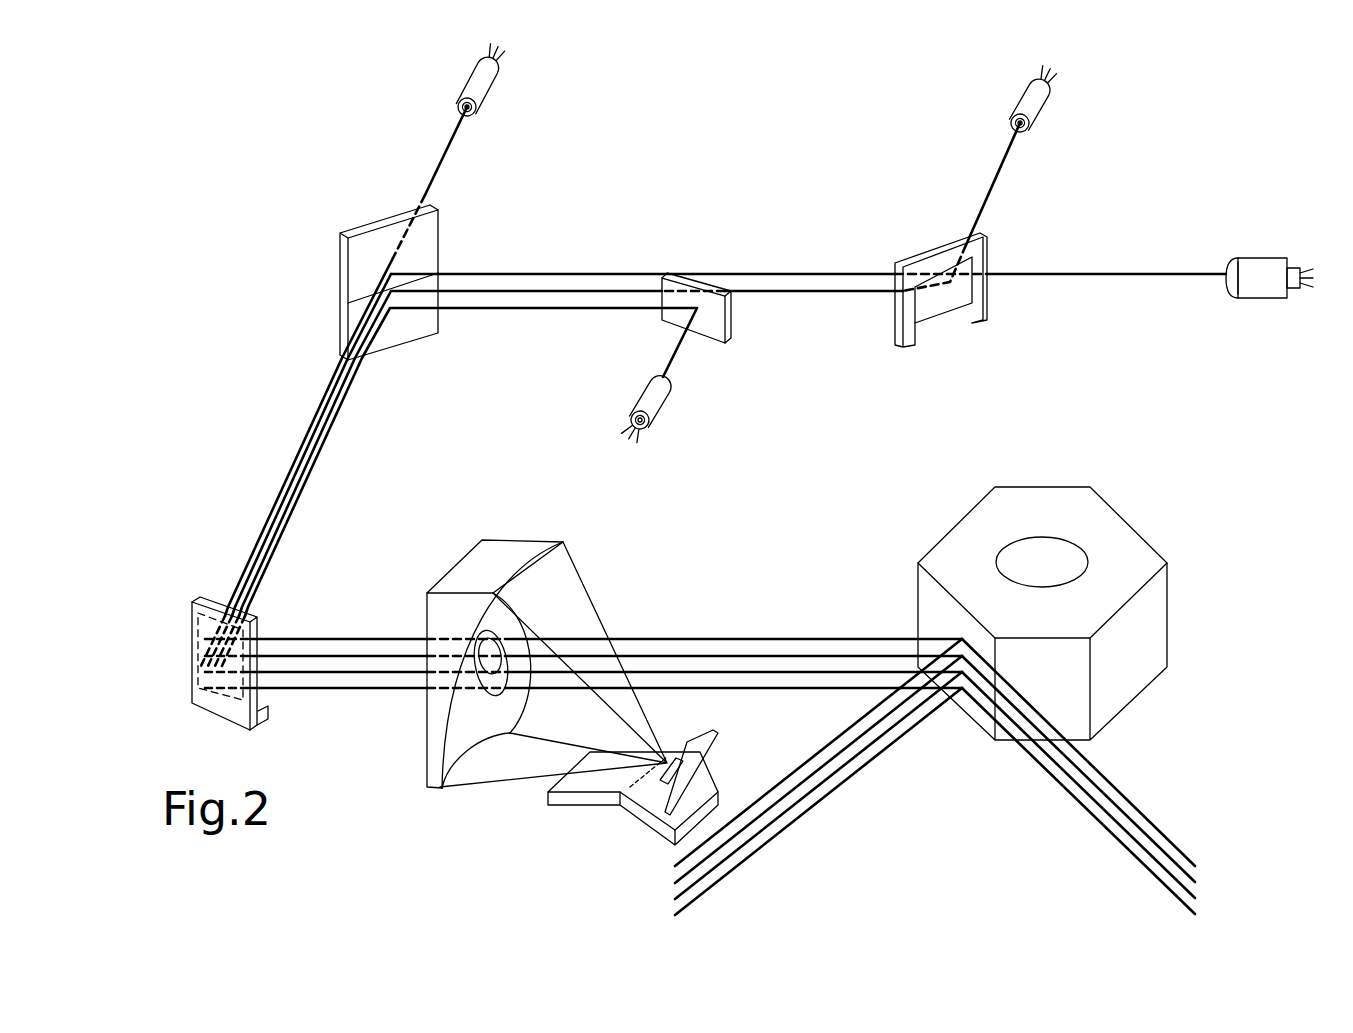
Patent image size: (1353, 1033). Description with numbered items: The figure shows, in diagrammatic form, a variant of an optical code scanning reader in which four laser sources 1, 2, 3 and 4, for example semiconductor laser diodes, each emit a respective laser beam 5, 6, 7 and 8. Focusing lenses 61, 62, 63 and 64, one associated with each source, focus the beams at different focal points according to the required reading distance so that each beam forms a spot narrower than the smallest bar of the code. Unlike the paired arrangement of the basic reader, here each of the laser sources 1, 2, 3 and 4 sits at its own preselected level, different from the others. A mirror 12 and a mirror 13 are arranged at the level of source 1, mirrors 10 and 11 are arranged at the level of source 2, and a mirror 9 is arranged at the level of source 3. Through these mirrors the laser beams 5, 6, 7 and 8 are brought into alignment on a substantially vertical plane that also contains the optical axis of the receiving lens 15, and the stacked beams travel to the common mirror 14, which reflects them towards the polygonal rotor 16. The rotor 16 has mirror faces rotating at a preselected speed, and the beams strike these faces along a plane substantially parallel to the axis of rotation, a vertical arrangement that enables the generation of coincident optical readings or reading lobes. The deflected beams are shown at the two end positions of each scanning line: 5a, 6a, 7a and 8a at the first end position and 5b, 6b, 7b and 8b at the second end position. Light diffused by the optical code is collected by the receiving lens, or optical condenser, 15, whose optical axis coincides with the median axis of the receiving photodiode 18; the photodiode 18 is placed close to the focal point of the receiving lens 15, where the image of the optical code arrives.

The laser source 1 is at (630, 423).
The laser source 2 is at (1036, 76).
The laser source 3 is at (1293, 268).
The laser source 4 is at (480, 63).
The laser beam 5 is at (677, 362).
The laser beam 6 is at (983, 200).
The laser beam 7 is at (1195, 272).
The laser beam 8 is at (433, 167).
The mirror 9 is at (340, 252).
The mirror 10 is at (930, 302).
The mirror 11 is at (418, 286).
The mirror 12 is at (718, 345).
The mirror 13 is at (420, 304).
The common mirror 14 is at (200, 703).
The receiving lens 15 is at (435, 788).
The polygonal rotor 16 is at (1023, 619).
The receiving photodiode 18 is at (667, 760).
The focusing lens 61 is at (652, 389).
The focusing lens 62 is at (1012, 111).
The focusing lens 63 is at (1228, 284).
The focusing lens 64 is at (460, 105).
The laser beam in first end position 5a is at (845, 784).
The laser beam in first end position 6a is at (810, 800).
The laser beam in first end position 7a is at (803, 820).
The laser beam in first end position 8a is at (755, 837).
The laser beam in second end position 5b is at (1062, 786).
The laser beam in second end position 6b is at (1087, 812).
The laser beam in second end position 7b is at (1097, 822).
The laser beam in second end position 8b is at (1117, 840).